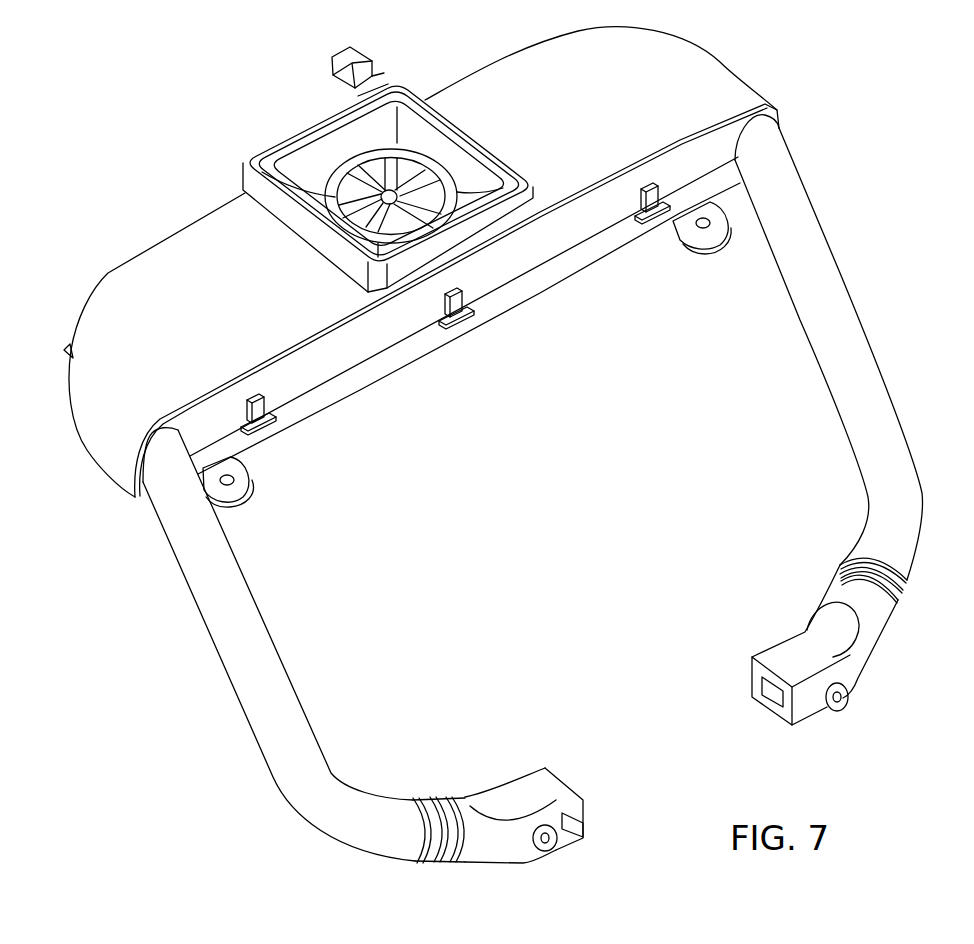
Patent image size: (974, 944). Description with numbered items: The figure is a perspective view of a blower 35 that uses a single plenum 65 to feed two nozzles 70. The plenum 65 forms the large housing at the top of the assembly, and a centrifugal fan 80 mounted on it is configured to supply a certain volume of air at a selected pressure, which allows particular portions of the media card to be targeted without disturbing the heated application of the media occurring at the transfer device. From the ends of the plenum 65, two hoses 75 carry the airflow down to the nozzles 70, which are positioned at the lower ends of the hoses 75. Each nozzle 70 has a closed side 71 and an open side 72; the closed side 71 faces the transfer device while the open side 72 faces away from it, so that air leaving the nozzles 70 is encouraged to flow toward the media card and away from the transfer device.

The blower 35 is at (855, 168).
The plenum 65 is at (168, 270).
The centrifugal fan 80 is at (377, 165).
The hoses 75 is at (851, 352).
The nozzles 70 is at (853, 667).
The closed side 71 is at (757, 675).
The open side 72 is at (795, 703).